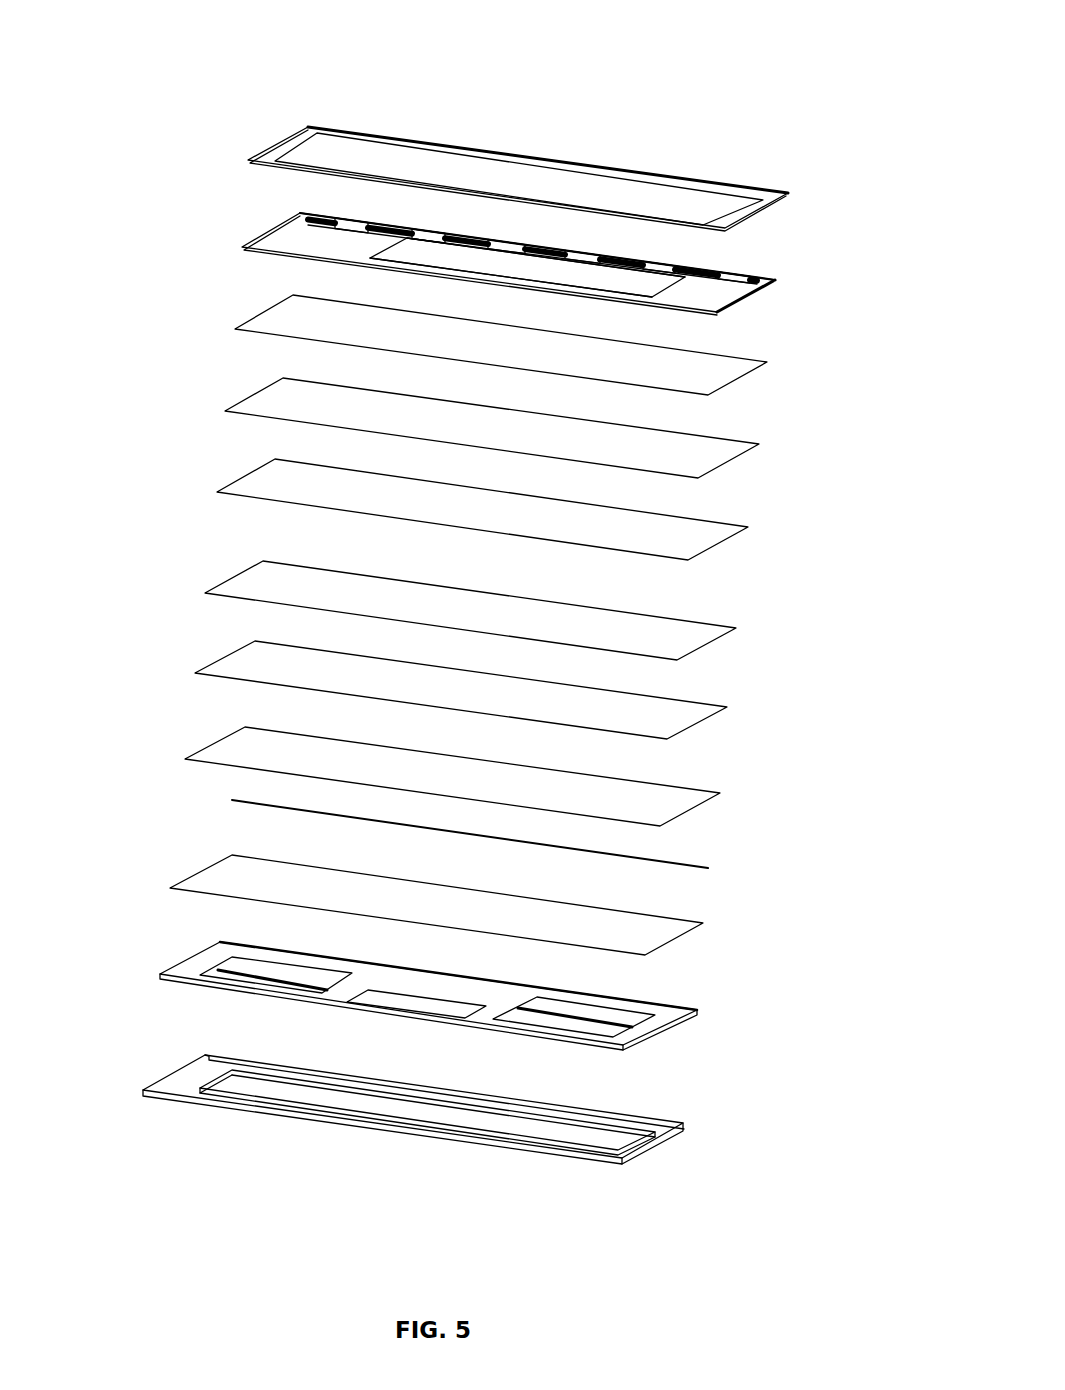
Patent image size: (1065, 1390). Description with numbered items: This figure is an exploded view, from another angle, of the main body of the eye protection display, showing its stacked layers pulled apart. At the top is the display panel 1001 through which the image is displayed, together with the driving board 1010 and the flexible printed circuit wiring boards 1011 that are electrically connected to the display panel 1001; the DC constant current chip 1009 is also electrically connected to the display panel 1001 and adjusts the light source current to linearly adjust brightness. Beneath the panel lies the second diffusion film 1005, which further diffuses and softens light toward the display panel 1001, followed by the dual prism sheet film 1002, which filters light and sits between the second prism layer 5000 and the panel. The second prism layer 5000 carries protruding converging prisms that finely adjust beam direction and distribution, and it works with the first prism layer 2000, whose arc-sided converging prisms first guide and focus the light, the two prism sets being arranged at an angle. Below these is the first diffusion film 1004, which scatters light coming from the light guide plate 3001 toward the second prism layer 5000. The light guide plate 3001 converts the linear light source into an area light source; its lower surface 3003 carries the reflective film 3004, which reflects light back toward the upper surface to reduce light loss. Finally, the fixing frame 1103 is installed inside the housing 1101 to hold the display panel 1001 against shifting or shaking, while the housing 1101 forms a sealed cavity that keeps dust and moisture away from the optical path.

The display panel 1001 is at (278, 228).
The driving board 1010 is at (305, 243).
The flexible printed circuit (FPC) wiring boards 1011 is at (347, 216).
The DC constant current chip 1009 is at (660, 283).
The second diffusion film 1005 is at (767, 362).
The dual prism sheet film 1002 is at (759, 444).
The second prism layer 5000 is at (748, 527).
The first prism layer 2000 is at (736, 628).
The first diffusion film 1004 is at (727, 707).
The light guide plate 3001 is at (720, 793).
The lower surface 3003 is at (639, 805).
The reflective film 3004 is at (590, 925).
The fixing frame 1103 is at (623, 1045).
The housing 1101 is at (513, 1138).